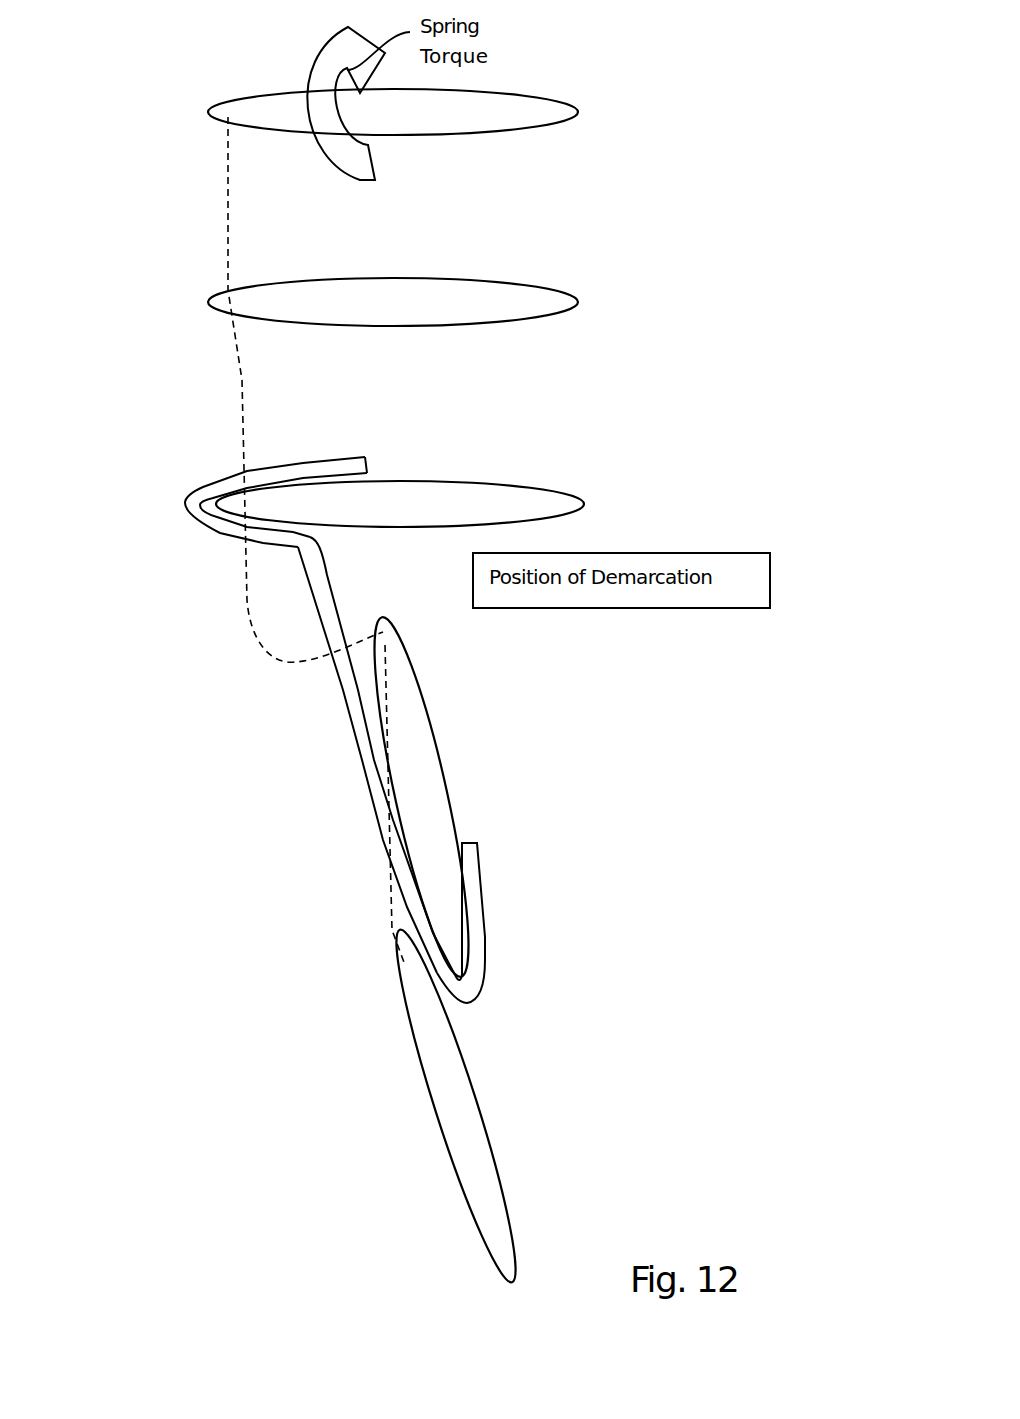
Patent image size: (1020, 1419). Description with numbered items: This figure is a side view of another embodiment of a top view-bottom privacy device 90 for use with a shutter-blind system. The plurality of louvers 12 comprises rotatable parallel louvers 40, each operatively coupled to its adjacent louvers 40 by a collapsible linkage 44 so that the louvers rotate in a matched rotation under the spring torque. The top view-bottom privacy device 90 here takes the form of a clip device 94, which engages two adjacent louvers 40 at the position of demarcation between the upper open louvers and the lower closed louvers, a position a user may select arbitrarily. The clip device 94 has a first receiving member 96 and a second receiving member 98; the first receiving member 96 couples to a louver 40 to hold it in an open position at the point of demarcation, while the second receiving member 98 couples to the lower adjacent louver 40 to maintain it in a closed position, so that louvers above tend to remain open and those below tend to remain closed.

The plurality of louvers 12 is at (720, 255).
The louver 40 is at (512, 115).
The collapsible linkage 44 is at (228, 203).
The top view-bottom privacy device 90 is at (158, 735).
The clip device 94 is at (358, 707).
The first receiving member 96 is at (274, 470).
The second receiving member 98 is at (482, 937).